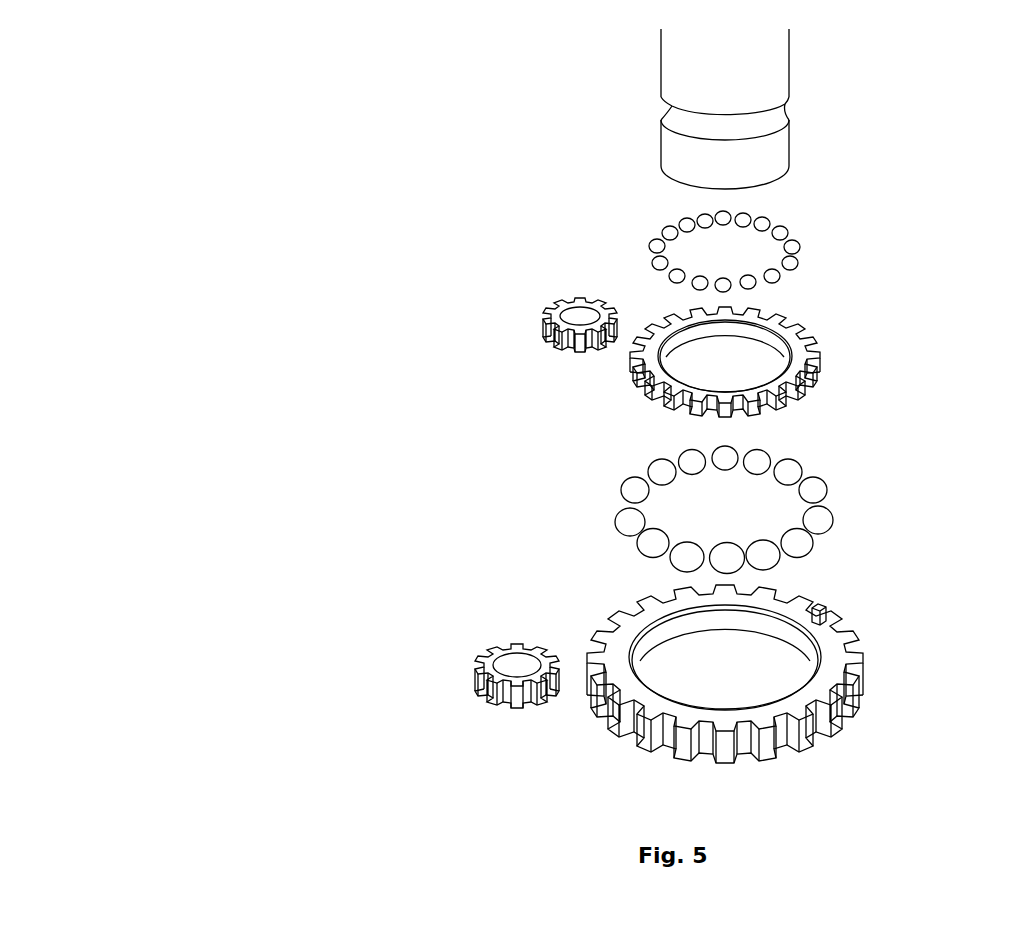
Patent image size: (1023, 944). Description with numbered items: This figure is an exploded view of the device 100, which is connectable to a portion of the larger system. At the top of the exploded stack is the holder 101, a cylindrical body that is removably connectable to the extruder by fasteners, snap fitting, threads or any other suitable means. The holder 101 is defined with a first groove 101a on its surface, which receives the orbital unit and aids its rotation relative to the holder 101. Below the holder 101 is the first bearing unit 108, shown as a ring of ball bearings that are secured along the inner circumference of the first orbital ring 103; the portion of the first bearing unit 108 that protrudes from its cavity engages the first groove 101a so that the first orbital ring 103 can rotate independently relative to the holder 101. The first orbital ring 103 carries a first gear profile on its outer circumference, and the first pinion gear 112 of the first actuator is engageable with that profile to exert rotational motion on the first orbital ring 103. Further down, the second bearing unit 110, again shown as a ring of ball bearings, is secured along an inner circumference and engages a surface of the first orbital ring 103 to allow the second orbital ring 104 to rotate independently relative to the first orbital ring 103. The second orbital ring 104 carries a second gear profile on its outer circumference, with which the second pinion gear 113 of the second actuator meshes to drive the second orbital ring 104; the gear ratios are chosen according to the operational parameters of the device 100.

The device 100 is at (266, 193).
The holder 101 is at (788, 109).
The first groove 101a is at (787, 111).
The first bearing unit 108 is at (797, 260).
The first pinion gear 112 is at (545, 332).
The first orbital ring 103 is at (820, 363).
The second bearing unit 110 is at (834, 518).
The second pinion gear 113 is at (475, 688).
The second orbital ring 104 is at (865, 690).